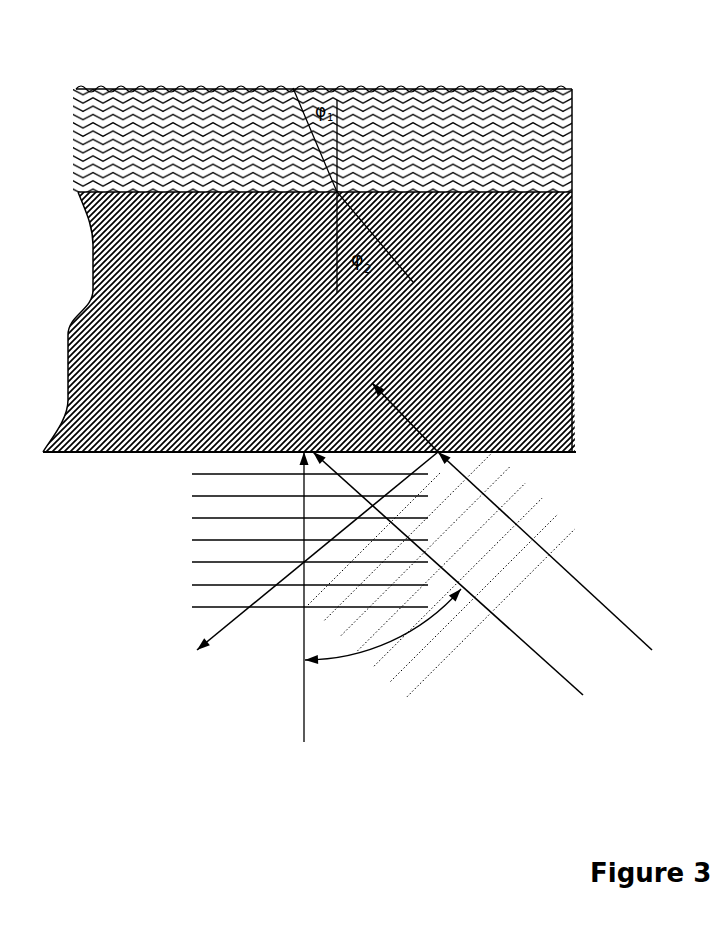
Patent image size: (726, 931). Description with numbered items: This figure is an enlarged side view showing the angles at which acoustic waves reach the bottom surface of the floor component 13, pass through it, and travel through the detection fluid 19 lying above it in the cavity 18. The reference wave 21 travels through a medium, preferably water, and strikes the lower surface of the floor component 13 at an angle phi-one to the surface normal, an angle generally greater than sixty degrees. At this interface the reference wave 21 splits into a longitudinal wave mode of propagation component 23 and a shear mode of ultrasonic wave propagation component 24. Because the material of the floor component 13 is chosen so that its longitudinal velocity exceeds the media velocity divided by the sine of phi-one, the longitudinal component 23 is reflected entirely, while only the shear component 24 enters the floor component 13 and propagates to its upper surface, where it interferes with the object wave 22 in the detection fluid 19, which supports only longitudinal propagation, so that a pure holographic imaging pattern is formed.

The floor component 13 is at (309, 270).
The cavity 18 is at (324, 59).
The detection fluid 19 is at (322, 140).
The reference wave 21 is at (478, 583).
The object wave 22 is at (298, 612).
The longitudinal wave mode of propagation component 23 is at (294, 562).
The shear mode of ultrasonic wave propagation component 24 is at (389, 407).